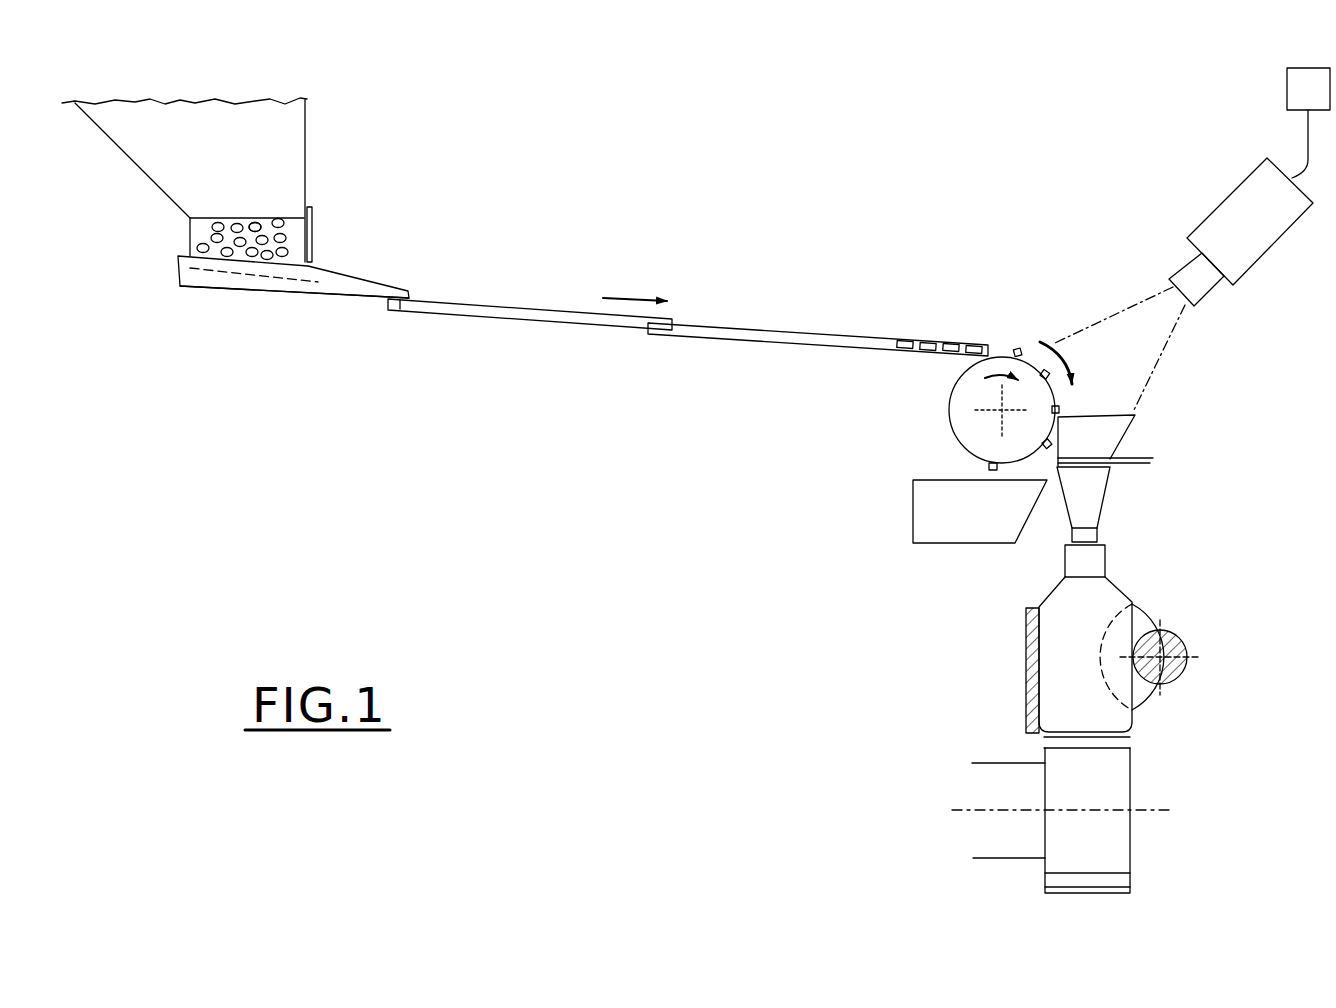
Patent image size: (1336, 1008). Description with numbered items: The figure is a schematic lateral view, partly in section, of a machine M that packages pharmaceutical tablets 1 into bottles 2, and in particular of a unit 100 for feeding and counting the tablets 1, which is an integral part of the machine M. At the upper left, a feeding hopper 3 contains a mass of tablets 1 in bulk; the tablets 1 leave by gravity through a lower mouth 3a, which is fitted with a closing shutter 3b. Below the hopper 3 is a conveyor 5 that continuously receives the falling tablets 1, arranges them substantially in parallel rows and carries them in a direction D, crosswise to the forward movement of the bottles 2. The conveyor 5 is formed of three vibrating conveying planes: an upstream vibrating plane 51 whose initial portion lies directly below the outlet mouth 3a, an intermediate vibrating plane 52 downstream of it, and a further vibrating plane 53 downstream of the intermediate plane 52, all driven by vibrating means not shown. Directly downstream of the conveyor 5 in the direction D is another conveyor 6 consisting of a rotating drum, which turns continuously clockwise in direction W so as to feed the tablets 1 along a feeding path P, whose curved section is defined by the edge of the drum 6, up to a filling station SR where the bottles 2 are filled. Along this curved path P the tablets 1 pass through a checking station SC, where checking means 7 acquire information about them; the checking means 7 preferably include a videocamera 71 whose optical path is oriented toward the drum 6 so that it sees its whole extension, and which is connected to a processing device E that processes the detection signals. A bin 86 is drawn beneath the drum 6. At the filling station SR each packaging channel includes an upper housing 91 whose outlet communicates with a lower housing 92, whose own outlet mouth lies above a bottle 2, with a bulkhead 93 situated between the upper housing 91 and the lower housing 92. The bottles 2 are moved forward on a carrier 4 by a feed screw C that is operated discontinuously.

The pharmaceutical tablets 1 is at (253, 221).
The bottles 2 is at (1030, 592).
The feeding hopper 3 is at (316, 128).
The lower mouth 3a is at (314, 283).
The closing shutter 3b is at (314, 243).
The carrier 4 is at (1151, 767).
The conveyor 5 is at (577, 266).
The rotating drum conveyor 6 is at (932, 407).
The checking means 7 is at (1162, 232).
The upstream vibrating conveying plane 51 is at (329, 307).
The intermediate vibrating conveying plane 52 is at (494, 324).
The downstream vibrating conveying plane 53 is at (716, 349).
The videocamera 71 is at (1232, 207).
The reject bin 86 is at (927, 515).
The upper housing 91 is at (1139, 433).
The lower housing 92 is at (1115, 513).
The bulkhead 93 is at (1136, 468).
The unit for feeding and counting tablets 100 is at (1060, 149).
The feed screw C is at (1193, 623).
The direction D is at (642, 281).
The processing device E is at (1308, 89).
The machine M is at (801, 173).
The feeding path P is at (1066, 364).
The checking station SC is at (1181, 352).
The filling station SR is at (1228, 519).
The rotation direction W is at (989, 391).